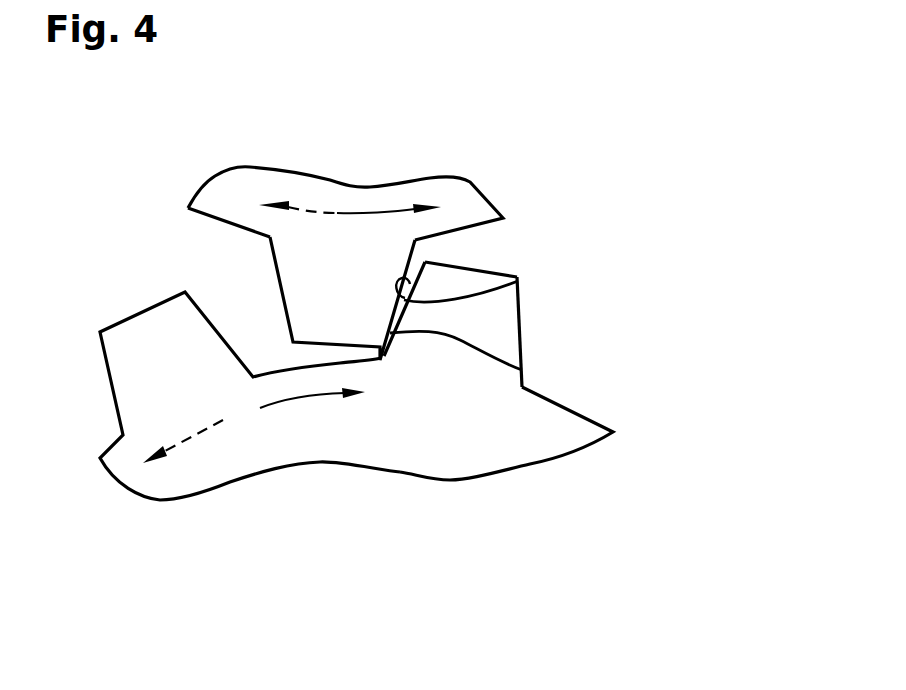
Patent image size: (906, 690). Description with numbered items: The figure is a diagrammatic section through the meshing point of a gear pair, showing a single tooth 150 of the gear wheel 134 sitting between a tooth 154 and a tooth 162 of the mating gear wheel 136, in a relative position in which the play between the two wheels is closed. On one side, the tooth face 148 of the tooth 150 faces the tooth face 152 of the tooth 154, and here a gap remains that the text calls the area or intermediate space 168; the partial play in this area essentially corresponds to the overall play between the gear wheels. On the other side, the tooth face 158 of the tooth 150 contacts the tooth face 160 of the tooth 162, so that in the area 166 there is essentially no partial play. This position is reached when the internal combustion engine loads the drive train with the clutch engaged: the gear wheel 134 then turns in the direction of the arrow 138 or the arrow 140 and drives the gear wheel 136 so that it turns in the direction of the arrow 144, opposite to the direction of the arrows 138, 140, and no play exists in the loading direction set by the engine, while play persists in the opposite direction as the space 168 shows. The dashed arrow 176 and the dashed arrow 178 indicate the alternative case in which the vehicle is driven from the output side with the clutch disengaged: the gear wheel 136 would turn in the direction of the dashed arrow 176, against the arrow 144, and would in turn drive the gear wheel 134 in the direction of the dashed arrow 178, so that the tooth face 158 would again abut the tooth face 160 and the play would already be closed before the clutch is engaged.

The gear wheel 134 is at (457, 203).
The gear wheel 136 is at (522, 443).
The arrow 138 is at (355, 213).
The arrow 140 is at (403, 212).
The arrow 144 is at (317, 394).
The tooth face 148 is at (275, 265).
The tooth 150 is at (365, 315).
The tooth face 152 is at (216, 330).
The tooth 154 is at (133, 348).
The tooth face 158 is at (411, 260).
The tooth face 160 is at (518, 282).
The tooth 162 is at (498, 328).
The area 166 is at (523, 370).
The intermediate space 168 is at (250, 317).
The dashed arrow 176 is at (190, 437).
The dashed arrow 178 is at (296, 208).